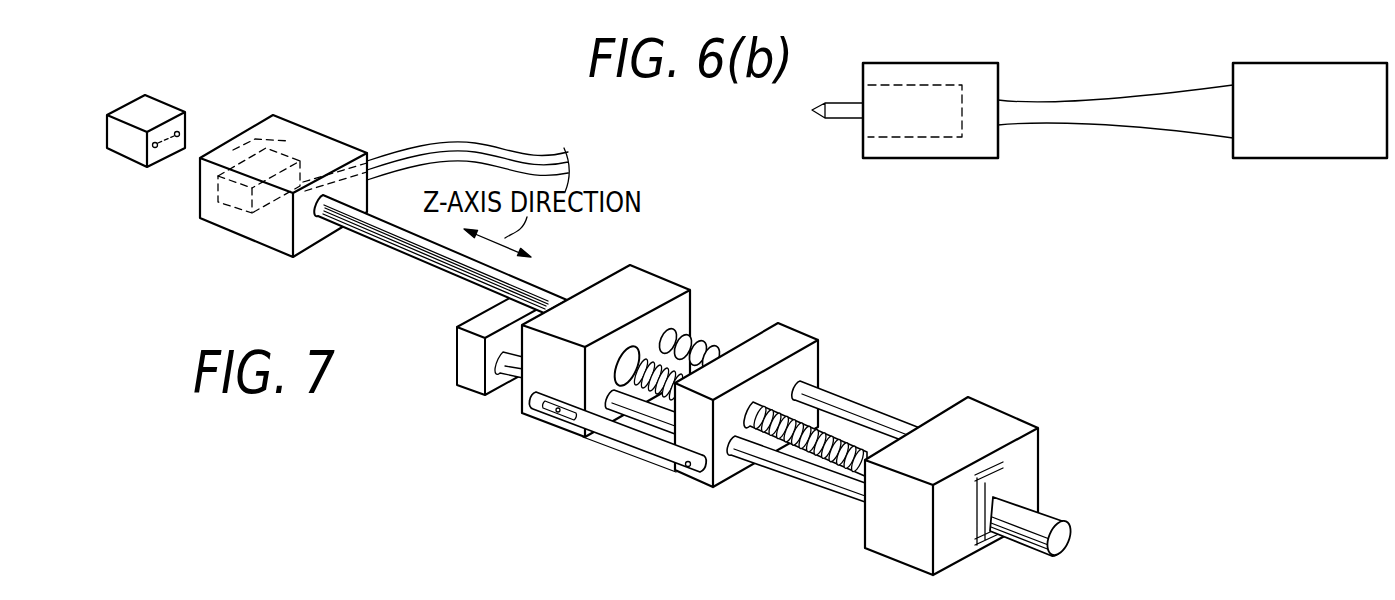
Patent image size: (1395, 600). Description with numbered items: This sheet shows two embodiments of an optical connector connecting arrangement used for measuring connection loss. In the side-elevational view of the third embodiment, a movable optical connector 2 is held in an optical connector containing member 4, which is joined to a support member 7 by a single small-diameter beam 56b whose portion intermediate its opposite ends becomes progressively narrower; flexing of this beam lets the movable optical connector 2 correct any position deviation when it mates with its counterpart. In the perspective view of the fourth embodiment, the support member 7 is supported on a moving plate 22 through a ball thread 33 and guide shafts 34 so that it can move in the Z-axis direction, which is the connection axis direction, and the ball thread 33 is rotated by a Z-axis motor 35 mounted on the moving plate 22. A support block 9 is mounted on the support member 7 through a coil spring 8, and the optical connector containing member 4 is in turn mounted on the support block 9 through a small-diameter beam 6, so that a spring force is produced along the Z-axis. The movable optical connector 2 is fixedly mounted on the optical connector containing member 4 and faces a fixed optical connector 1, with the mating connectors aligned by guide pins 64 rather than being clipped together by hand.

In FIG. 7, the fixed optical connector 1 is at (168, 108).
In FIG. 7, the movable optical connector 2 is at (300, 161).
The movable optical connector 2 is at (927, 82).
In FIG. 7, the optical connector containing member 4 is at (263, 225).
The optical connector containing member 4 is at (978, 75).
In FIG. 7, the small-diameter beam 6 is at (415, 245).
In FIG. 7, the guide pin 64 is at (218, 177).
In FIG. 7, the support block 9 is at (647, 287).
In FIG. 7, the coil spring 8 is at (700, 340).
In FIG. 7, the support member 7 is at (785, 338).
The support member 7 is at (1268, 80).
In FIG. 7, the guide shaft 34 is at (838, 405).
In FIG. 7, the ball thread 33 is at (803, 445).
In FIG. 7, the moving plate 22 is at (980, 422).
In FIG. 7, the Z-axis motor 35 is at (1045, 520).
The small-diameter beam 56b is at (1155, 108).